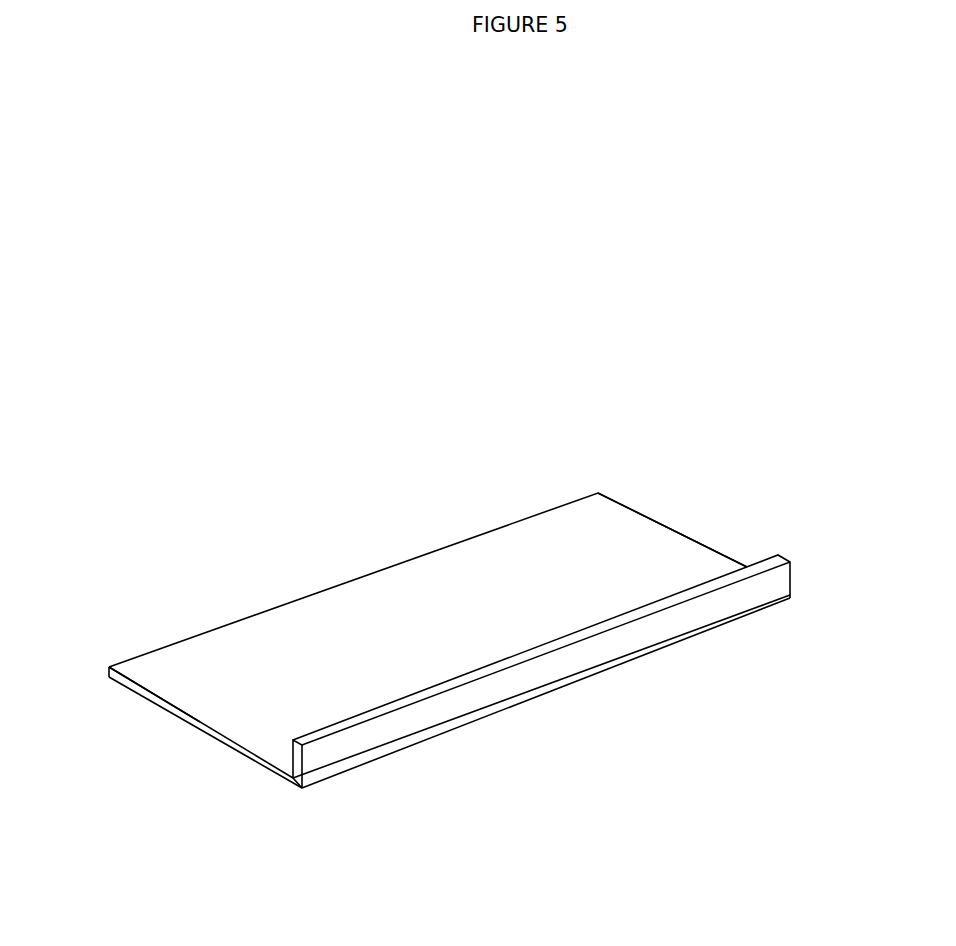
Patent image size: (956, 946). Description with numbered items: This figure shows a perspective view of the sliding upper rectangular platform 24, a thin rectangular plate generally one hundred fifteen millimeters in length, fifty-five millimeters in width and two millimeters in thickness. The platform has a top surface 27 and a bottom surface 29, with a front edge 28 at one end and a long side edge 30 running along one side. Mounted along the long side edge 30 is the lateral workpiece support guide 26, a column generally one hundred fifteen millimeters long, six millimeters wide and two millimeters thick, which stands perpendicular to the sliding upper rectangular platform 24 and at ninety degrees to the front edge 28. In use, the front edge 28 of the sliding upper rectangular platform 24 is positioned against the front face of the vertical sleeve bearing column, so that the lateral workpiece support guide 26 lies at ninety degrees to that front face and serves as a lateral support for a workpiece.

The sliding upper rectangular platform 24 is at (400, 602).
The lateral workpiece support guide 26 is at (547, 665).
The top surface 27 is at (247, 695).
The front edge 28 is at (670, 528).
The bottom surface 29 is at (255, 773).
The long side edge 30 is at (490, 712).